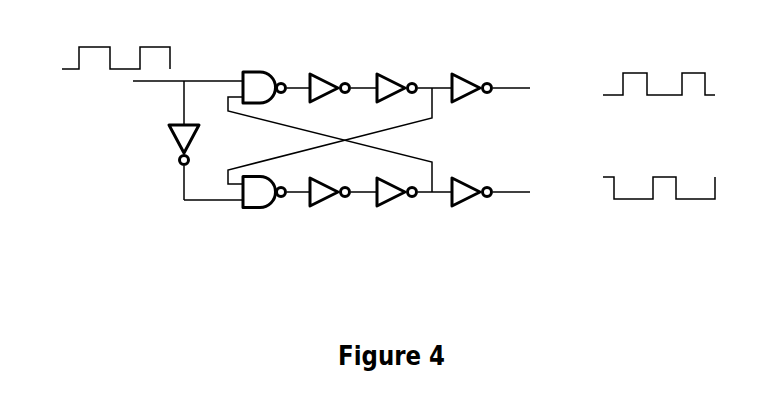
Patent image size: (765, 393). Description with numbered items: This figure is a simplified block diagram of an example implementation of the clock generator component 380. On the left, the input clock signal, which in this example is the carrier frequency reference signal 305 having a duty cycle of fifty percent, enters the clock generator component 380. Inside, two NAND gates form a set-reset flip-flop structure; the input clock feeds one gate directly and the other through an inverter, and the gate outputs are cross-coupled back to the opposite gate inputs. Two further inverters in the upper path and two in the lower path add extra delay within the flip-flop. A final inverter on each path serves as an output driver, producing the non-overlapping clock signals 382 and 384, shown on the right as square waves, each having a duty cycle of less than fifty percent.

The carrier frequency reference signal 305 is at (62, 56).
The clock generator component 380 is at (210, 265).
The clock signal 382 is at (571, 68).
The clock signal 384 is at (571, 178).